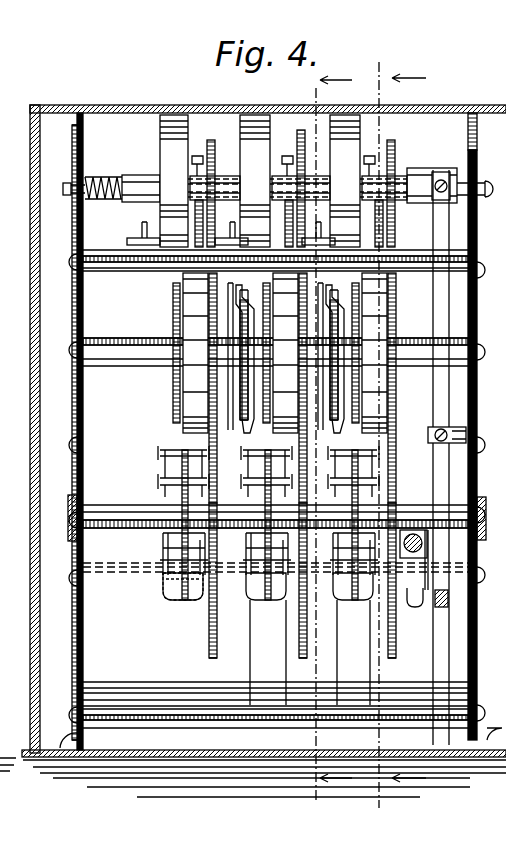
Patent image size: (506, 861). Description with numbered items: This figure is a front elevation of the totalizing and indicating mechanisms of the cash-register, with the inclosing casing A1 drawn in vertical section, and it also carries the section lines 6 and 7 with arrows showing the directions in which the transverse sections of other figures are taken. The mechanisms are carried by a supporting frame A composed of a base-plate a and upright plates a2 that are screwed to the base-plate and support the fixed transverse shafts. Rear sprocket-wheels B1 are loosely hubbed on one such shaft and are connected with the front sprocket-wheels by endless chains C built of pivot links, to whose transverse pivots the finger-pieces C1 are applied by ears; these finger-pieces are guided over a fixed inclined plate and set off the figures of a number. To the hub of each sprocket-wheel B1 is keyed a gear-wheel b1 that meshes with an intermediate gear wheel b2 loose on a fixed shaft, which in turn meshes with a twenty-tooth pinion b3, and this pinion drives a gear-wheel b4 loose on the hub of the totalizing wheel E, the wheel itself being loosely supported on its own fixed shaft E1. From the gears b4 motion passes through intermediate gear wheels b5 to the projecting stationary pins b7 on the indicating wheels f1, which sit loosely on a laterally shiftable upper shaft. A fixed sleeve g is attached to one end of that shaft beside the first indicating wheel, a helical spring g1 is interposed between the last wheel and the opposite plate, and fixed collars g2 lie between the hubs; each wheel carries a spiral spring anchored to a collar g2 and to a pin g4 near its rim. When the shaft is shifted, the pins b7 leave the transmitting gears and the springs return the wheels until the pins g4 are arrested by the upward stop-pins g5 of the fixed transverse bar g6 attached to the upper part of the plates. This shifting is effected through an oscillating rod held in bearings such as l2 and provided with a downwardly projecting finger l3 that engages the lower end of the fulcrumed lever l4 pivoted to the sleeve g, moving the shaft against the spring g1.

The casing A1 is at (34, 447).
The base-plate a is at (253, 764).
The frame A is at (118, 432).
The upright front-plates a2 is at (283, 432).
The fixed sleeve g is at (278, 175).
The helical spring g1 is at (104, 180).
The indicating drums f1 is at (245, 181).
The intermediate gear wheel b5 is at (301, 181).
The projecting pins b7 is at (283, 152).
The fixed collars g2 is at (300, 177).
The stop-pins g5 is at (231, 228).
The pin g4 is at (130, 276).
The fixed transverse bar g6 is at (100, 262).
The vertical bar l4 is at (455, 226).
The register shaft E1 is at (180, 390).
The totalizing wheel E is at (183, 327).
The pinion b3 is at (311, 388).
The gear-wheel b4 is at (392, 417).
The endless chains C is at (170, 448).
The sprocket-wheels B1 is at (275, 517).
The gear-wheel b1 is at (285, 517).
The finger-pieces C1 is at (275, 634).
The intermediate gear wheel b2 is at (209, 638).
The bearing l2 is at (402, 540).
The downwardly projecting finger l3 is at (427, 610).
The section line 7 7 is at (330, 437).
The section line 6 6 is at (399, 433).